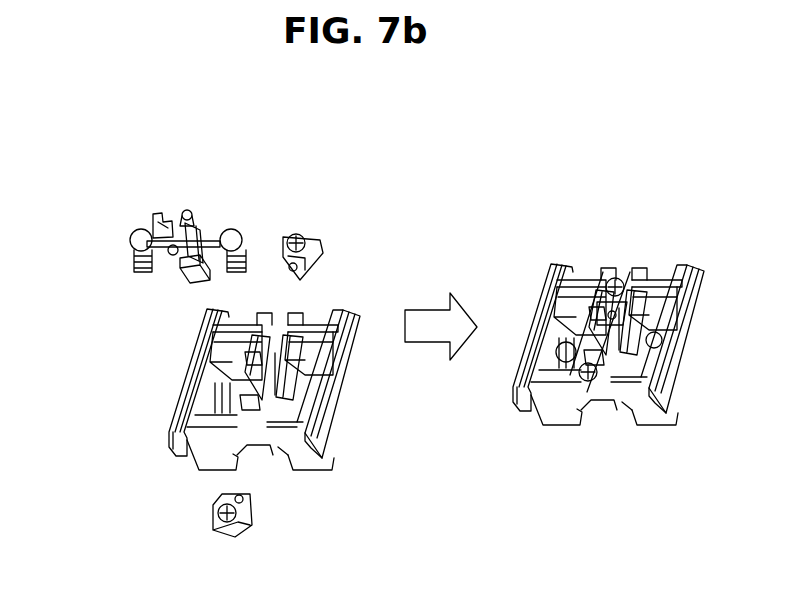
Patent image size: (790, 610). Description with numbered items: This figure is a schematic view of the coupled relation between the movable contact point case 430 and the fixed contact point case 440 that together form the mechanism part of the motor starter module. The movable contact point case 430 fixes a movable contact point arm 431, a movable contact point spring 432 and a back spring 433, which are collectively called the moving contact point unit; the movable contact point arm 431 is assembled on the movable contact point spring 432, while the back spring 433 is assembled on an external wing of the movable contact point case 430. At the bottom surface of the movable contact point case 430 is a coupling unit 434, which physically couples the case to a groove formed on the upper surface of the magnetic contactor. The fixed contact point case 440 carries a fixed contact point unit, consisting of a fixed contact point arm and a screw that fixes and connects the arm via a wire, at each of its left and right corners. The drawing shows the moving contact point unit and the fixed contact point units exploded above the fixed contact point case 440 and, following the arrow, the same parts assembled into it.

The movable contact point case 430 is at (158, 220).
The movable contact point arm 431 is at (183, 212).
The movable contact point spring 432 is at (155, 232).
The back spring 433 is at (132, 260).
The coupling unit 434 is at (180, 275).
The fixed contact point case 440 is at (203, 443).